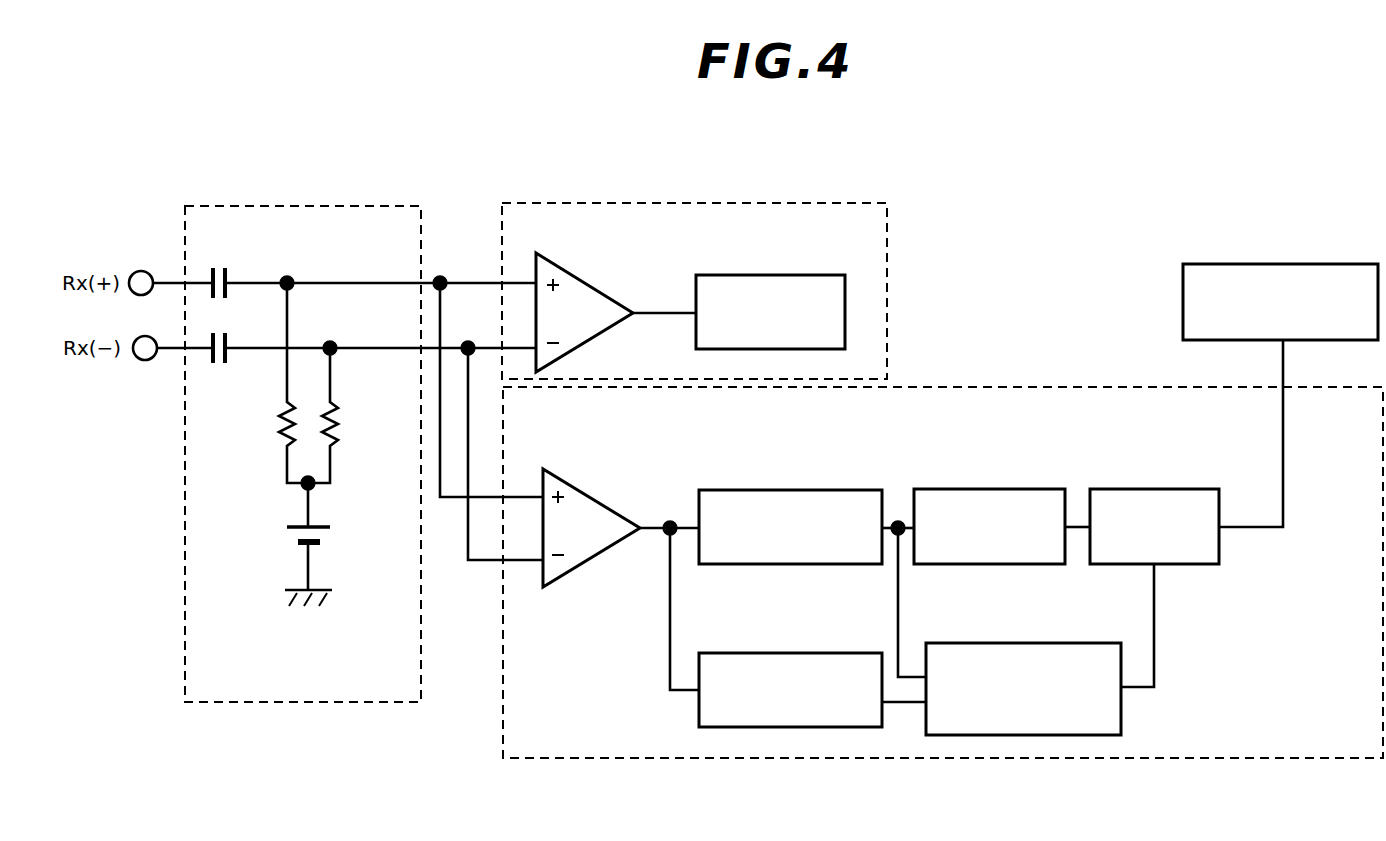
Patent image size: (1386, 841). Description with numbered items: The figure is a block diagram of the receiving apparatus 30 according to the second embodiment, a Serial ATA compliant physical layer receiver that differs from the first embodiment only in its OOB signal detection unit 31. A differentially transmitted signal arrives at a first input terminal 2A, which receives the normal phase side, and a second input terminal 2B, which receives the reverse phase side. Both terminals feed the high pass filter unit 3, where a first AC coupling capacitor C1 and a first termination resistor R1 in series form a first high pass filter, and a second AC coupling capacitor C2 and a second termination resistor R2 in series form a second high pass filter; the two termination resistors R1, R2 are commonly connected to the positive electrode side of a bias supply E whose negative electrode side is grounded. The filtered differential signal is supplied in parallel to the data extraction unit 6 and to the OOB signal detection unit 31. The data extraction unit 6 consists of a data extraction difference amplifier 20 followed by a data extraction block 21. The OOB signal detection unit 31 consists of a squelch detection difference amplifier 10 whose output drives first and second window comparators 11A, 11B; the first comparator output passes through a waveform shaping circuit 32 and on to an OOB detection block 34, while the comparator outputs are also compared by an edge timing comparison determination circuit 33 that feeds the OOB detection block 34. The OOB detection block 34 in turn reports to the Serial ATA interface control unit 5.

The first input terminal 2A is at (141, 271).
The second input terminal 2B is at (145, 361).
The high pass filter unit 3 is at (355, 206).
The first AC coupling capacitor C1 is at (228, 277).
The second AC coupling capacitor C2 is at (228, 344).
The first termination resistor R1 is at (280, 432).
The second termination resistor R2 is at (338, 418).
The bias supply E is at (291, 536).
The data extraction unit 6 is at (748, 203).
The data extraction difference amplifier 20 is at (597, 284).
The data extraction block 21 is at (778, 275).
The receiving apparatus 30 is at (951, 212).
The OOB signal detection unit 31 is at (1065, 387).
The squelch detection difference amplifier 10 is at (600, 498).
The first window comparator 11A is at (805, 490).
The second window comparator 11B is at (805, 653).
The waveform shaping circuit 32 is at (1003, 489).
The edge timing comparison determination circuit 33 is at (1032, 643).
The OOB detection block 34 is at (1162, 489).
The Serial ATA interface control unit 5 is at (1297, 264).